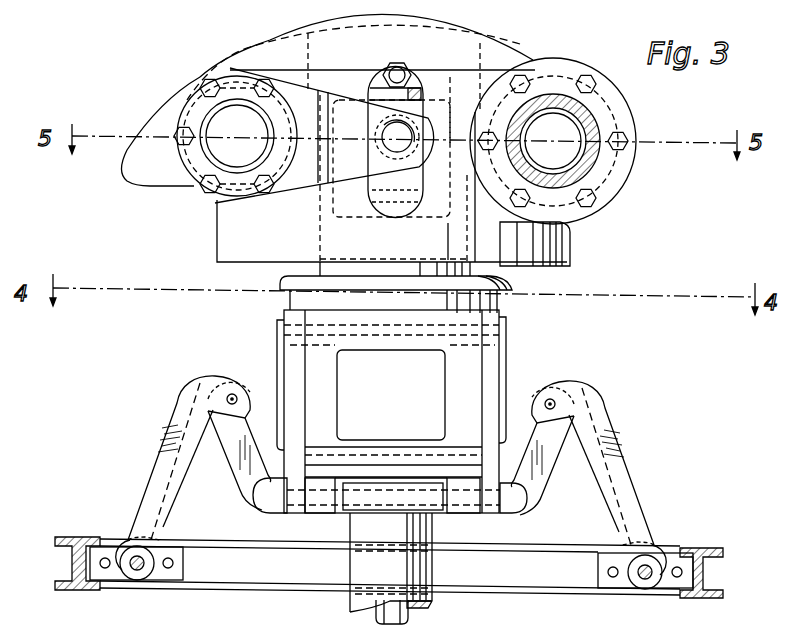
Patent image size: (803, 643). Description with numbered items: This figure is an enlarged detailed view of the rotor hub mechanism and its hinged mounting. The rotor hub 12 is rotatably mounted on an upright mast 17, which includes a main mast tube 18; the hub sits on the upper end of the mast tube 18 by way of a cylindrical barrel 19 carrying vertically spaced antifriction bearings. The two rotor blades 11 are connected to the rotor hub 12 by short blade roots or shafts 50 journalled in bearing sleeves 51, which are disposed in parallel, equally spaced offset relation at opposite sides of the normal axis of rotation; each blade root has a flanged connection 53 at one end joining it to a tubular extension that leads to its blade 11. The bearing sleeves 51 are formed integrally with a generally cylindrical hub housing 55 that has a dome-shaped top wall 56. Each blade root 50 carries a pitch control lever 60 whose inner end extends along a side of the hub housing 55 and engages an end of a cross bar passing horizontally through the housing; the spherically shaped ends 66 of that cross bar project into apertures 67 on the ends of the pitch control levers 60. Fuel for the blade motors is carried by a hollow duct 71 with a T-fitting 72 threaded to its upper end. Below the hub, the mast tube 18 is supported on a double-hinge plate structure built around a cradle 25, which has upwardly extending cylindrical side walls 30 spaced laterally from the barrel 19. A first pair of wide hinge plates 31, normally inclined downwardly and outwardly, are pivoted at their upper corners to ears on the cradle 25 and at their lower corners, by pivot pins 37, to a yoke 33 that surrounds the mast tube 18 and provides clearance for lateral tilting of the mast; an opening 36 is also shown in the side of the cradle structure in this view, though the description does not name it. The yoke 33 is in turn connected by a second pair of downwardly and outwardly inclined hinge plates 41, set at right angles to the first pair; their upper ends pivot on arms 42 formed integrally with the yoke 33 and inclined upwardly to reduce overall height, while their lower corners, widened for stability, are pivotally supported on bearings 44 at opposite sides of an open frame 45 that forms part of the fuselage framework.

The rotor blade 11 is at (132, 178).
The rotor hub 12 is at (521, 42).
The mast 17 is at (347, 566).
The main mast tube 18 is at (348, 599).
The cylindrical barrel 19 is at (322, 268).
The cradle 25 is at (512, 335).
The cylindrical side walls 30 is at (505, 350).
The hinge plates 31 is at (487, 379).
The yoke 33 is at (258, 508).
The opening 36 is at (393, 352).
The pivot pins 37 is at (365, 500).
The lower hinge plates 41 is at (168, 433).
The arms 42 is at (240, 466).
The bearings 44 is at (119, 576).
The open frame 45 is at (516, 597).
The blade roots 50 is at (592, 120).
The bearing sleeves 51 is at (201, 84).
The flanged connection 53 is at (636, 182).
The hub housing 55 is at (572, 245).
The dome-shaped top wall 56 is at (300, 30).
The pitch control lever 60 is at (323, 92).
The cross bar ends 66 is at (380, 132).
The apertures 67 is at (382, 146).
The hollow duct 71 is at (386, 196).
The T-fitting 72 is at (411, 72).